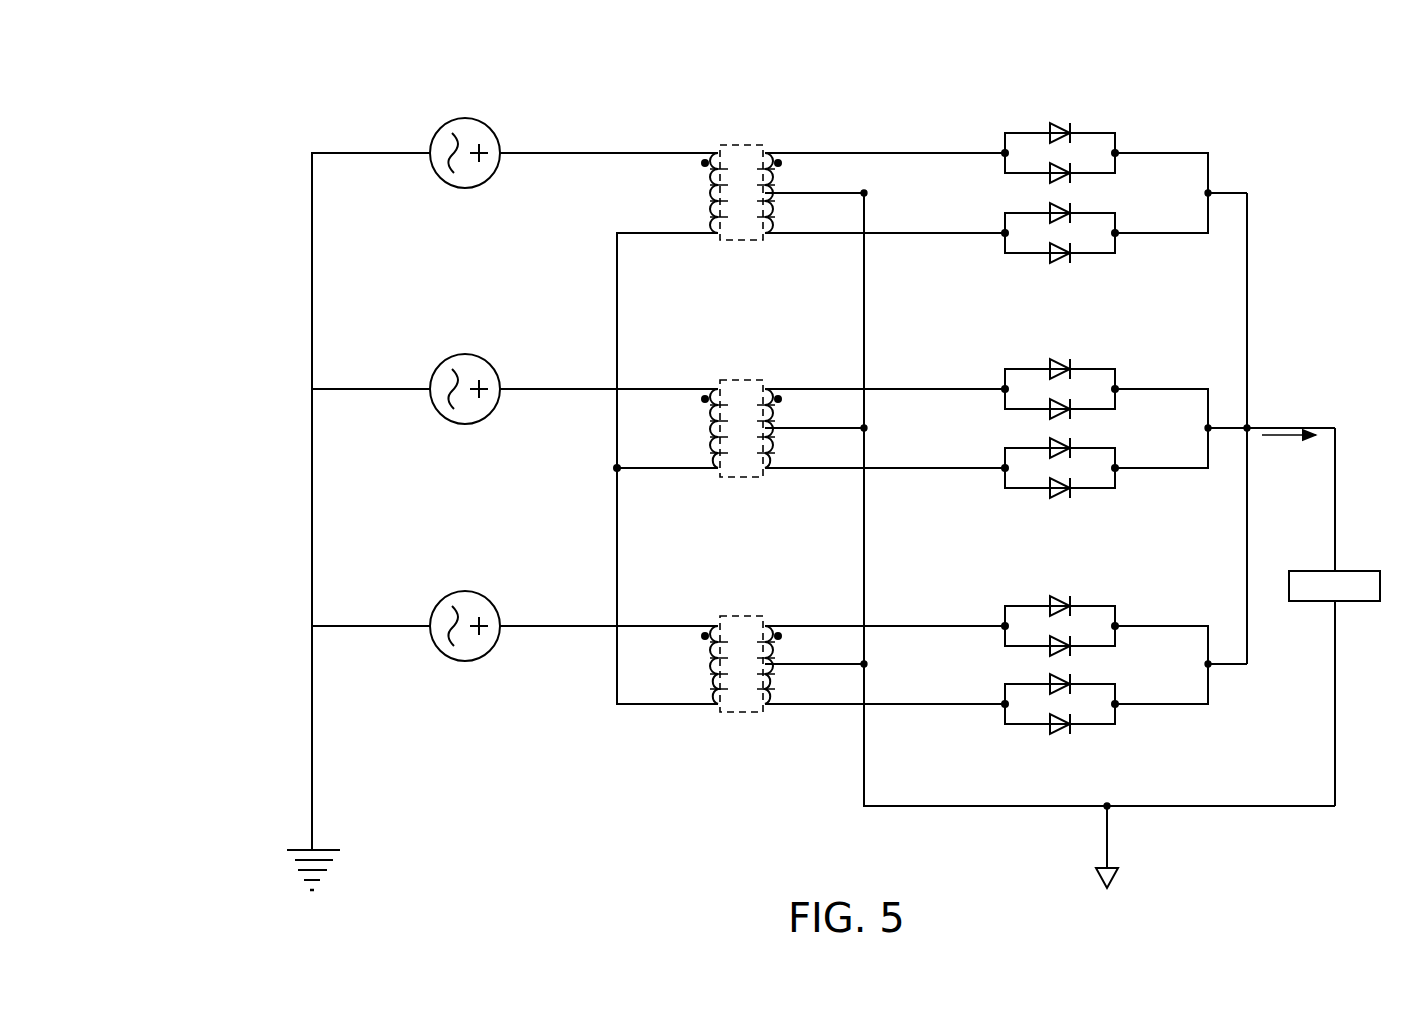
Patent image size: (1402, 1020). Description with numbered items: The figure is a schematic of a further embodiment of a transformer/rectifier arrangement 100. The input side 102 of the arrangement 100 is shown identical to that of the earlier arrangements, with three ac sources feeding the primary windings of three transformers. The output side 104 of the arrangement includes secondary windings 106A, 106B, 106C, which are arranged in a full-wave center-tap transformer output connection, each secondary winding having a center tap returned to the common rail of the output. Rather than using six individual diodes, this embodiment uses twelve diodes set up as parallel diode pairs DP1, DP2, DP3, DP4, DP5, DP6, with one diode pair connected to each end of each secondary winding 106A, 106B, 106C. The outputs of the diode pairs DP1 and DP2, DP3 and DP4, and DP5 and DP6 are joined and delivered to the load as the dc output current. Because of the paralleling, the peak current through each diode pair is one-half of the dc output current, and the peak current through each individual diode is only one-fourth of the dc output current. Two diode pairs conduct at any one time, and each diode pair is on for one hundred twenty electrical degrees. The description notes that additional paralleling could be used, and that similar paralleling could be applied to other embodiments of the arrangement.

The transformer/rectifier arrangement 100 is at (752, 482).
The input side 102 is at (485, 473).
The output side 104 is at (639, 492).
The secondary winding 106A is at (881, 193).
The secondary winding 106B is at (881, 428).
The secondary winding 106C is at (881, 665).
The diode pair DP1 is at (1112, 115).
The diode pair DP2 is at (1013, 268).
The diode pair DP3 is at (1111, 350).
The diode pair DP4 is at (1013, 503).
The diode pair DP5 is at (1111, 587).
The diode pair DP6 is at (1012, 738).